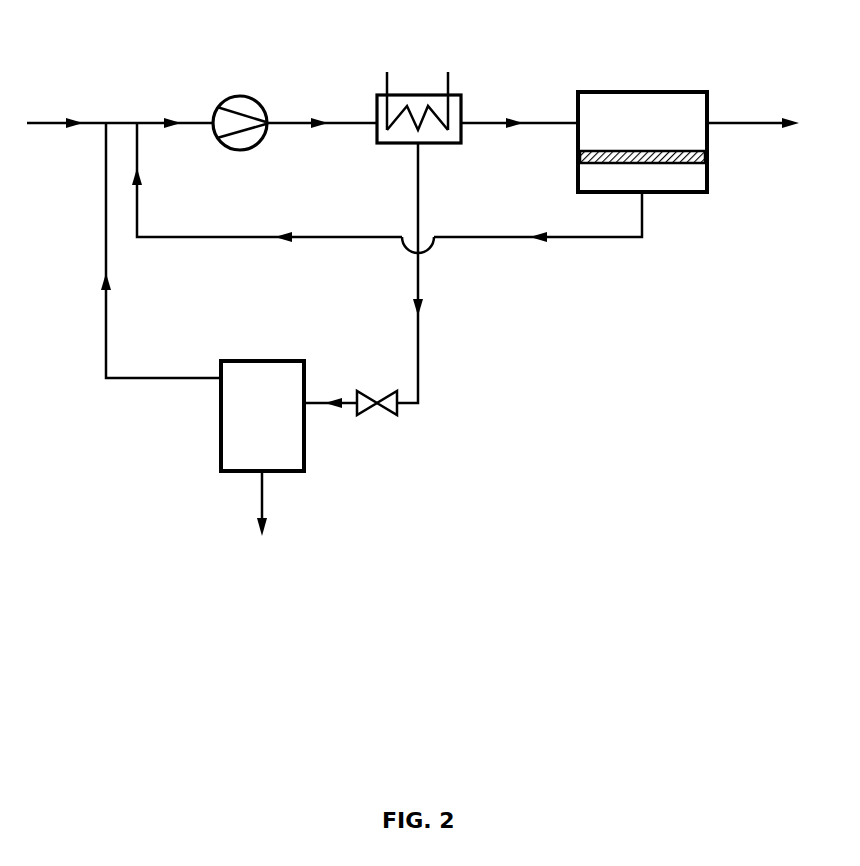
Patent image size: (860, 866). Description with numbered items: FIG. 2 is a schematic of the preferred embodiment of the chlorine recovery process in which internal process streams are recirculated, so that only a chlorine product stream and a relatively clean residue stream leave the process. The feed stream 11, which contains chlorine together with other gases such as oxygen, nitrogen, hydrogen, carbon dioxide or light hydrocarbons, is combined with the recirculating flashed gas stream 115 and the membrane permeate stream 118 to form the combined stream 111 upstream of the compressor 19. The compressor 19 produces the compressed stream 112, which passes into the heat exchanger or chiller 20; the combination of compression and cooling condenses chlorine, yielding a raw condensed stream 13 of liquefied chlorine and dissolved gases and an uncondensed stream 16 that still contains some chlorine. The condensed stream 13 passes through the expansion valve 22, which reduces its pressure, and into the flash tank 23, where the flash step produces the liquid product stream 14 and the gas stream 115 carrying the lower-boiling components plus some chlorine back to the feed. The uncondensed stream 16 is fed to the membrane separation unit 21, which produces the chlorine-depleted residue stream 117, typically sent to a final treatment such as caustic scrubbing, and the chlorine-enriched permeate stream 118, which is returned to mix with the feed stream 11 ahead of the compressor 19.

The feed stream 11 is at (66, 108).
The combined stream 111 is at (159, 108).
The compressor 19 is at (245, 96).
The compressed stream 112 is at (322, 108).
The heat exchanger or chiller 20 is at (456, 96).
The uncondensed stream 16 is at (519, 108).
The membrane separation unit 21 is at (698, 92).
The residue stream 117 is at (777, 124).
The permeate stream 118 is at (387, 198).
The condensed stream 13 is at (430, 273).
The expansion valve 22 is at (392, 416).
The flash tank 23 is at (220, 458).
The flashed gas stream 115 is at (136, 250).
The liquid product stream 14 is at (265, 519).